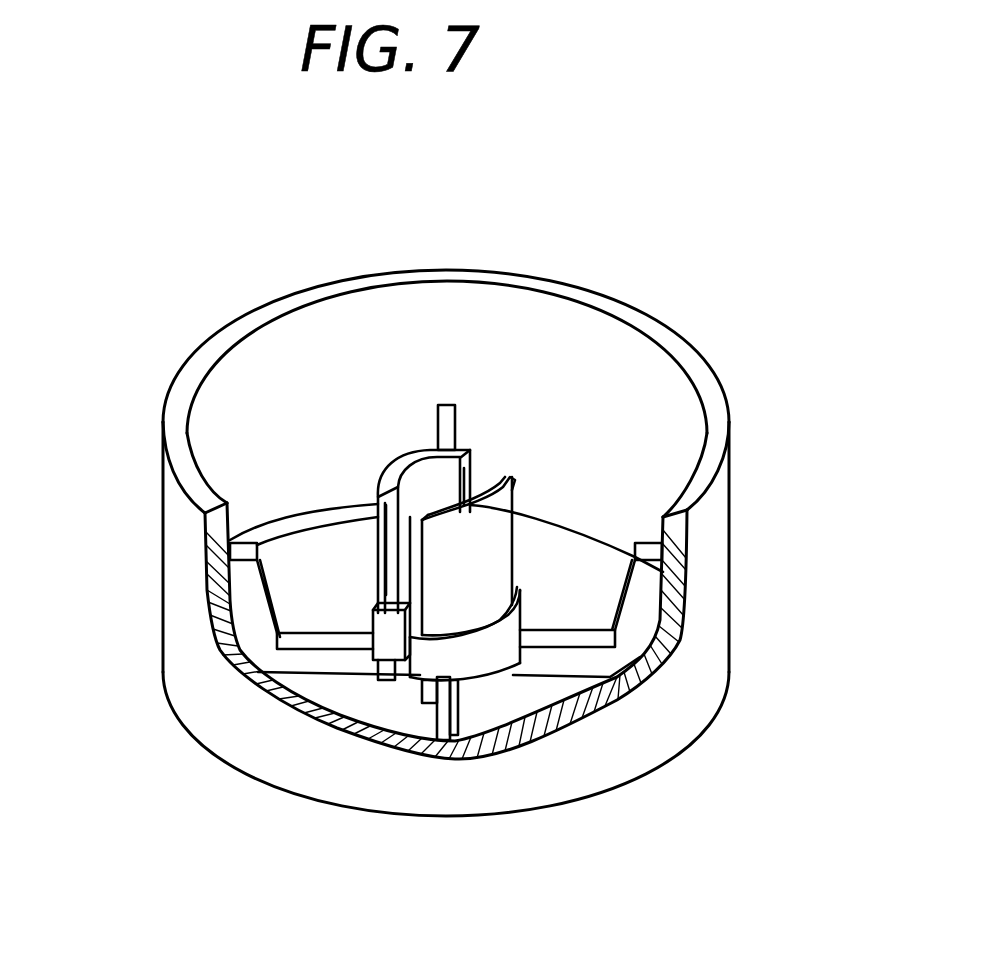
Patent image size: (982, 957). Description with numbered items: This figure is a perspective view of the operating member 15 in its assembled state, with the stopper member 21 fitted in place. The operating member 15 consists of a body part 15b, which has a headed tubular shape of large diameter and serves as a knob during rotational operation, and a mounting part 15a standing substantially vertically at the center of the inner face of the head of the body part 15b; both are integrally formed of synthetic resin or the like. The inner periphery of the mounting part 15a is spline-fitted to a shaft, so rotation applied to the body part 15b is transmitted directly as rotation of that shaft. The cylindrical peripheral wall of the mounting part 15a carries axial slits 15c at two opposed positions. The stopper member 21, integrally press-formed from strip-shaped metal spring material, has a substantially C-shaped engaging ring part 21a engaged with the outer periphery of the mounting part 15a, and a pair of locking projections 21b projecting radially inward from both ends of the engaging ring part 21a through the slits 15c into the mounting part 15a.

The operating member 15 is at (163, 395).
The mounting part 15a is at (404, 450).
The body part 15b is at (713, 562).
The slits 15c is at (487, 468).
The stopper member 21 is at (497, 677).
The engaging ring part 21a is at (457, 660).
The locking projections 21b is at (403, 650).